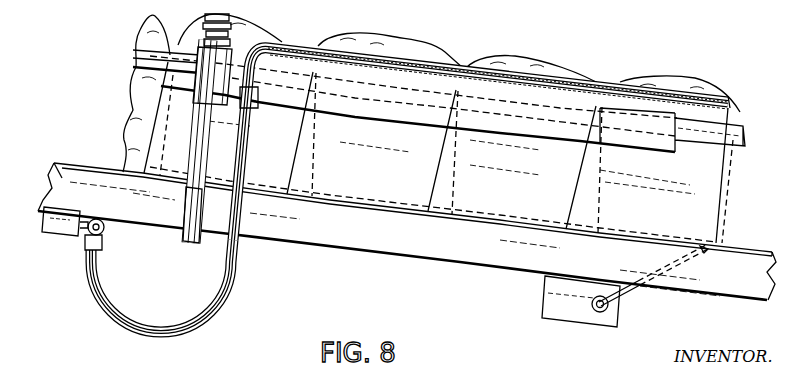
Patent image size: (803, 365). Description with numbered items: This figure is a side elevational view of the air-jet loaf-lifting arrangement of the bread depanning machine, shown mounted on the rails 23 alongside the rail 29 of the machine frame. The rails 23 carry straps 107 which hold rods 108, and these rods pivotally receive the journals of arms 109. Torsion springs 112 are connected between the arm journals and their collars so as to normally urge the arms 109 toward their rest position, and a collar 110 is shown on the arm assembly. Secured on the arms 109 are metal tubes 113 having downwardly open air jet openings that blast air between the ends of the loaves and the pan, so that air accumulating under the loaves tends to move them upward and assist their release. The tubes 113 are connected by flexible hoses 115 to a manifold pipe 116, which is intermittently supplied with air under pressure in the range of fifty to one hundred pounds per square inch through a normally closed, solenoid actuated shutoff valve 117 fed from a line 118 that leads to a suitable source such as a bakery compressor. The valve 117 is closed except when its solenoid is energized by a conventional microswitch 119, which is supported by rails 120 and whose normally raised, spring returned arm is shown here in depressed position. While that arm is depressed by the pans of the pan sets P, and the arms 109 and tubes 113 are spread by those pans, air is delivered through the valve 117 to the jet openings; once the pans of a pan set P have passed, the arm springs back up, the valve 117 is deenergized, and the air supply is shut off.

The rail 23 is at (395, 245).
The rail flange 29 is at (737, 246).
The pan set P is at (727, 158).
The strap 107 is at (181, 210).
The rod 108 is at (203, 140).
The arm 109 is at (635, 100).
The supply pipe 110 is at (263, 44).
The torsion spring 112 is at (230, 50).
The metal tube 113 is at (463, 70).
The flexible hose 115 is at (232, 272).
The manifold pipe 116 is at (88, 240).
The shutoff valve 117 is at (55, 227).
The line 118 is at (58, 0).
The microswitch 119 is at (550, 305).
The rail 120 is at (690, 270).